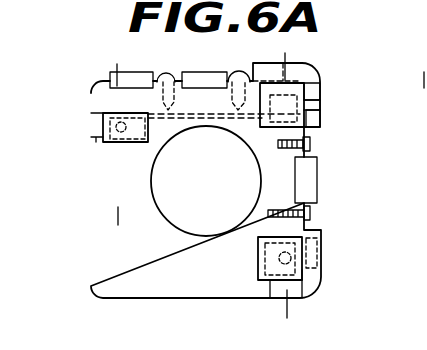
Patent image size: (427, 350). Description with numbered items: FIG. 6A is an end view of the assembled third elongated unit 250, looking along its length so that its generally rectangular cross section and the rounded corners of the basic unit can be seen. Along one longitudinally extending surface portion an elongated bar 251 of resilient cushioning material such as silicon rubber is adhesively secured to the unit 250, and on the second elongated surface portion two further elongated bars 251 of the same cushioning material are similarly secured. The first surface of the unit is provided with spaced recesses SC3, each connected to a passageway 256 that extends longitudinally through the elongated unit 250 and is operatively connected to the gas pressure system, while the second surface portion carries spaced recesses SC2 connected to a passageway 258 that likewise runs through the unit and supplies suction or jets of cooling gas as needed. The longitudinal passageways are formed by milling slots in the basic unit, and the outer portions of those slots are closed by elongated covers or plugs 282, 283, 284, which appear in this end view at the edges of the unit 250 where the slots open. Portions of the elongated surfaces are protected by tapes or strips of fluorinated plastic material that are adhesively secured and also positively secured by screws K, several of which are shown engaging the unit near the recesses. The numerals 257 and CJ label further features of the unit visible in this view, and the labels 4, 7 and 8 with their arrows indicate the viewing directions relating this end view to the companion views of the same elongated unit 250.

The third elongated unit 250 is at (426, 290).
The elongated bar 251 is at (201, 72).
The screws K is at (230, 95).
The spaced recesses SC2 is at (310, 66).
The elongated cover or plug 284 is at (318, 88).
The contact 257 is at (300, 100).
The cable junction CJ is at (328, 122).
The passageway 258 is at (102, 114).
The elongated cover or plug 283 is at (97, 137).
The spaced recesses SC3 is at (322, 245).
The passageway 256 is at (303, 277).
The elongated cover or plug 282 is at (277, 298).
The section line 8 is at (139, 47).
The section line 7 is at (263, 40).
The view direction 4 is at (421, 86).